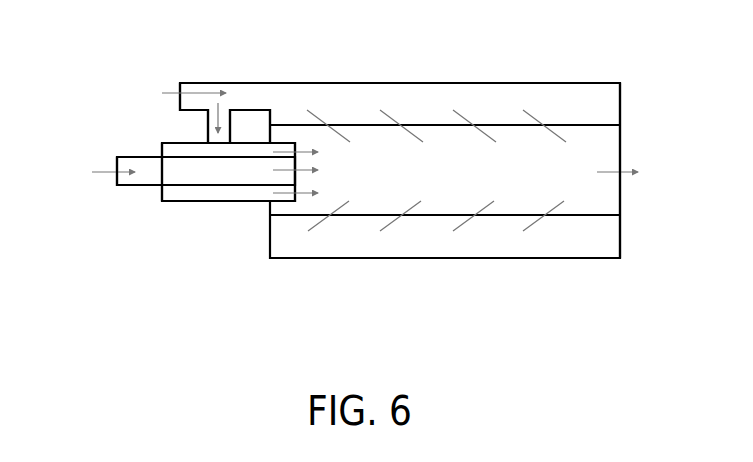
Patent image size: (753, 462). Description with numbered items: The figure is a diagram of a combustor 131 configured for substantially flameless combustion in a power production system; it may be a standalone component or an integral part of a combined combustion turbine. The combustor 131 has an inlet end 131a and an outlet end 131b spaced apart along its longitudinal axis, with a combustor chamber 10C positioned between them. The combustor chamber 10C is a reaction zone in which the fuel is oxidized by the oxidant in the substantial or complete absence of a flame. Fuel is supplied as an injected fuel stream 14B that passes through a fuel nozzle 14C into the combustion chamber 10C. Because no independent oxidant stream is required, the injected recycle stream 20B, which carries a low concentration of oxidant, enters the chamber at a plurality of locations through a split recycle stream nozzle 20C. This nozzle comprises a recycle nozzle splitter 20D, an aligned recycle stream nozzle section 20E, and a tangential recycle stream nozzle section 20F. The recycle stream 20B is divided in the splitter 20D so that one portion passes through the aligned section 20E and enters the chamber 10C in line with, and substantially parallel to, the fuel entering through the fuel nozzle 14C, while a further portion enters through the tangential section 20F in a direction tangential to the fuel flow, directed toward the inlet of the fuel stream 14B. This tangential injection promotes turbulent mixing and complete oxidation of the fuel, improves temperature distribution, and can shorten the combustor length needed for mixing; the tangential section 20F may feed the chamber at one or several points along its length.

The combustor 131 is at (434, 61).
The inlet end 131a is at (146, 262).
The outlet end 131b is at (639, 272).
The injected recycle stream 20B is at (172, 107).
The split recycle stream nozzle 20C is at (190, 82).
The recycle nozzle splitter 20D is at (218, 82).
The aligned recycle stream nozzle section 20E is at (213, 202).
The tangential recycle stream nozzle section 20F is at (505, 82).
The injected fuel stream 14B is at (181, 172).
The fuel nozzle 14C is at (138, 187).
The combustor chamber 10C is at (454, 170).